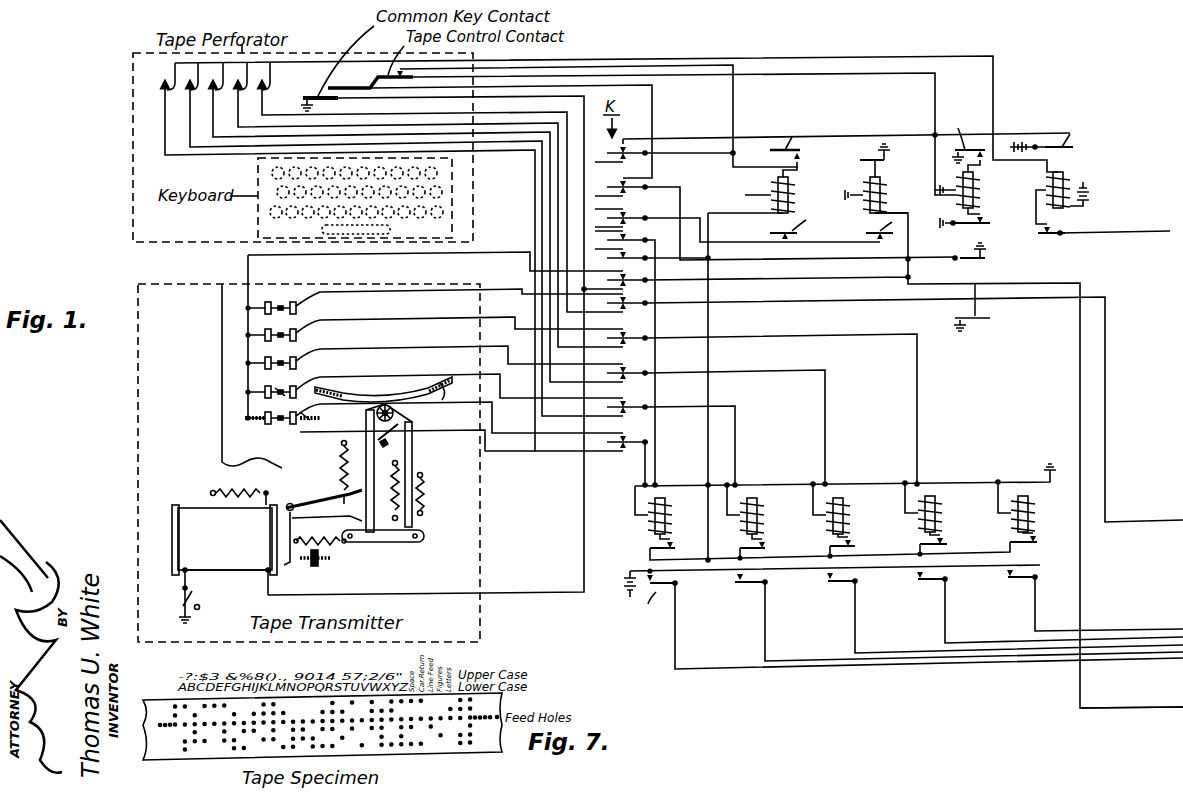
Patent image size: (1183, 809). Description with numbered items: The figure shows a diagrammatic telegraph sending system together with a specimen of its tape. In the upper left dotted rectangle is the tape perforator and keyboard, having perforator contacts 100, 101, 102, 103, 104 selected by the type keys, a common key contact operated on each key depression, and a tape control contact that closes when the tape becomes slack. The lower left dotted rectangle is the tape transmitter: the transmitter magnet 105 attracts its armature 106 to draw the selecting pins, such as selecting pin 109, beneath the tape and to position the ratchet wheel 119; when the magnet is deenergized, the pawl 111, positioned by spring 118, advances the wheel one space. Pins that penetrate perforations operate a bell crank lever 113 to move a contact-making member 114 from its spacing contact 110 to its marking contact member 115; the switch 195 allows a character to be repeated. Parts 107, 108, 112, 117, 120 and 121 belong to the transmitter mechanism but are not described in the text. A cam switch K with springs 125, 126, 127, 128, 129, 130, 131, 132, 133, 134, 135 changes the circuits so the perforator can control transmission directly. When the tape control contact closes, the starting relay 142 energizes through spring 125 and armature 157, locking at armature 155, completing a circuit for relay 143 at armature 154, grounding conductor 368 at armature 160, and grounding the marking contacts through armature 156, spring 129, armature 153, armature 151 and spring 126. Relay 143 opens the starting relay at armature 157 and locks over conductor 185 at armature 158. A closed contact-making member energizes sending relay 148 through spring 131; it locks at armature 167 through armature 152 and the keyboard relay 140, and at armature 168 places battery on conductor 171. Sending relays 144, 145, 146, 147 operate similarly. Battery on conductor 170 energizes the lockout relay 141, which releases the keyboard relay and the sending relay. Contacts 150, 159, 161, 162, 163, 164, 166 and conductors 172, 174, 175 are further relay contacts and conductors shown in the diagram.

The perforator contact 100 is at (172, 72).
The perforator contact 101 is at (196, 86).
The perforator contact 102 is at (221, 86).
The perforator contact 103 is at (245, 86).
The perforator contact 104 is at (272, 73).
The transmitter magnet 105 is at (201, 514).
The armature 106 is at (292, 566).
The contact block 107 is at (318, 566).
The contact 108 is at (332, 557).
The selecting pin 109 is at (366, 416).
The spacing contact 110 is at (300, 410).
The pawl 111 is at (402, 430).
The lever 112 is at (360, 492).
The bell crank lever 113 is at (342, 470).
The contact-making member 114 is at (268, 392).
The marking contact member 115 is at (265, 363).
The tape guide 117 is at (442, 396).
The spring 118 is at (423, 472).
The ratchet wheel 119 is at (385, 398).
The spring 120 is at (346, 518).
The pivot 121 is at (293, 504).
The spring of cam switch 125 is at (626, 158).
The spring of cam switch 126 is at (626, 192).
The spring of cam switch 127 is at (612, 218).
The spring of cam switch 128 is at (612, 241).
The spring of cam switch 129 is at (632, 260).
The spring of cam switch 130 is at (635, 282).
The spring of cam switch 131 is at (636, 305).
The spring of cam switch 132 is at (637, 340).
The spring of cam switch 133 is at (637, 375).
The spring of cam switch 134 is at (637, 409).
The spring of cam switch 135 is at (648, 444).
The keyboard relay 140 is at (751, 195).
The lockout relay 141 is at (863, 186).
The starting relay 142 is at (974, 197).
The relay 143 is at (1072, 188).
The sending relay 144 is at (672, 510).
The sending relay 145 is at (764, 510).
The sending relay 146 is at (850, 510).
The sending relay 147 is at (942, 508).
The sending relay 148 is at (1034, 526).
The relay contact 150 is at (783, 148).
The armature 151 is at (802, 219).
The armature 152 is at (868, 160).
The armature 153 is at (872, 231).
The armature 154 is at (962, 136).
The armature 155 is at (968, 226).
The armature 156 is at (968, 259).
The armature 157 is at (1078, 134).
The armature 158 is at (1050, 236).
The relay contact 159 is at (650, 548).
The armature 160 is at (966, 318).
The relay contact 161 is at (762, 547).
The relay contact 162 is at (758, 584).
The relay contact 163 is at (852, 545).
The relay contact 164 is at (848, 583).
The relay contact 166 is at (938, 582).
The armature 167 is at (1030, 543).
The armature 168 is at (1030, 586).
The conductor 170 is at (1148, 517).
The conductor 171 is at (1134, 626).
The conductor 172 is at (1063, 610).
The conductor 174 is at (1126, 660).
The conductor 175 is at (1170, 663).
The conductor 185 is at (1140, 231).
The switch 195 is at (191, 602).
The conductor 368 is at (1165, 709).